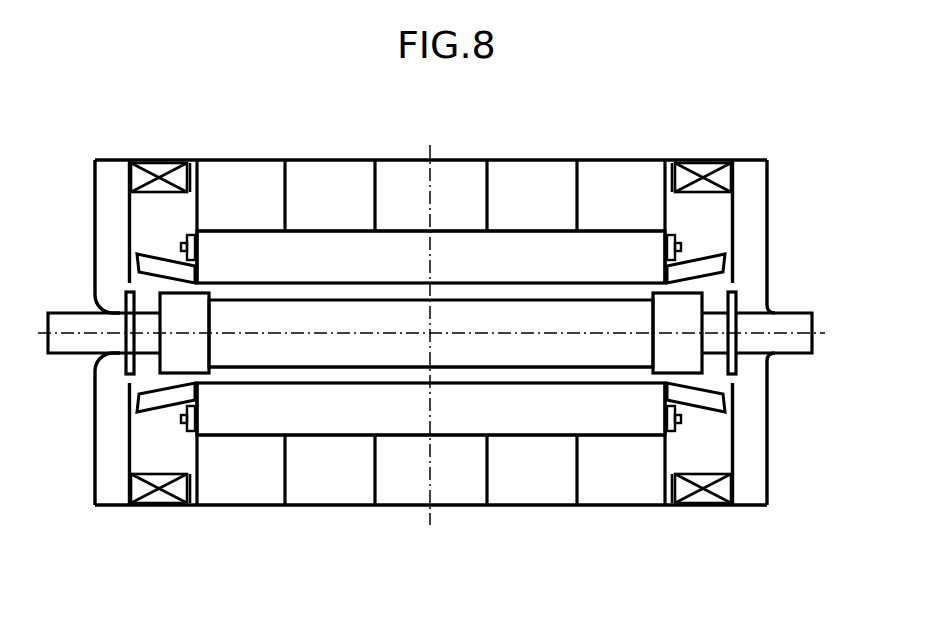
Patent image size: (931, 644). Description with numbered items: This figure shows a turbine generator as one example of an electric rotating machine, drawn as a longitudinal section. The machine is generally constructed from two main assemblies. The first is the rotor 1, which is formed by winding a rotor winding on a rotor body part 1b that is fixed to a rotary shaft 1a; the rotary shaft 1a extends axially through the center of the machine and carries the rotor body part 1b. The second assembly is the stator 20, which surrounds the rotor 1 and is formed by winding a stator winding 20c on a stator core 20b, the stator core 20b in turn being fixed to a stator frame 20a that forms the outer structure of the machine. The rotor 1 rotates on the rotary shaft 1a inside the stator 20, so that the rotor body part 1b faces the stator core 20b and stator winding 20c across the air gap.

The rotor 1 is at (270, 353).
The rotary shaft 1a is at (792, 345).
The rotor body part 1b is at (572, 353).
The stator 20 is at (322, 246).
The stator frame 20a is at (522, 162).
The stator core 20b is at (623, 248).
The stator winding 20c is at (725, 258).